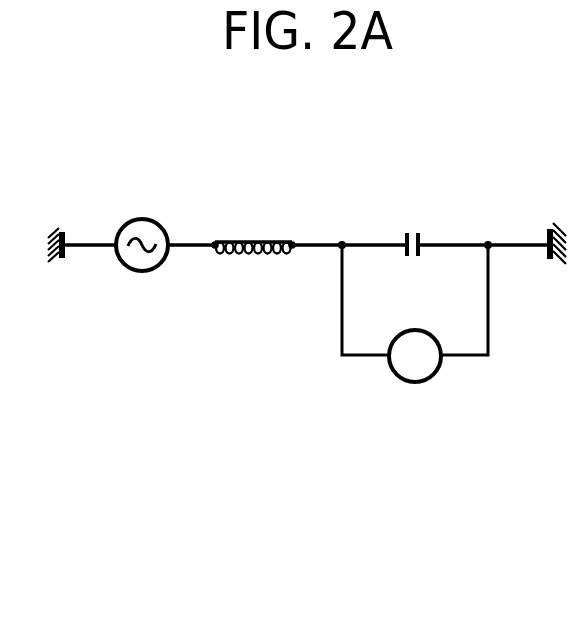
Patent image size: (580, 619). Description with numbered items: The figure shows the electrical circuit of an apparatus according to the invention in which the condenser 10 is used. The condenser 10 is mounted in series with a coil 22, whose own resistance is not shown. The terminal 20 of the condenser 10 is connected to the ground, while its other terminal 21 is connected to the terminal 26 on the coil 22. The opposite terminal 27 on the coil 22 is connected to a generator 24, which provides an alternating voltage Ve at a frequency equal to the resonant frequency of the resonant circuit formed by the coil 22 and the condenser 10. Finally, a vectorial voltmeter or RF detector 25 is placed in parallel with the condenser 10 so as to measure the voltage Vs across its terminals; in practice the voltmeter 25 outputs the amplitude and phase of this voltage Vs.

The condenser 10 is at (418, 236).
The terminal of condenser 20 is at (420, 256).
The terminal of condenser 21 is at (406, 255).
The coil 22 is at (264, 240).
The generator 24 is at (143, 219).
The vectorial voltmeter 25 is at (412, 370).
The terminal of coil 26 is at (292, 250).
The terminal of coil 27 is at (215, 250).